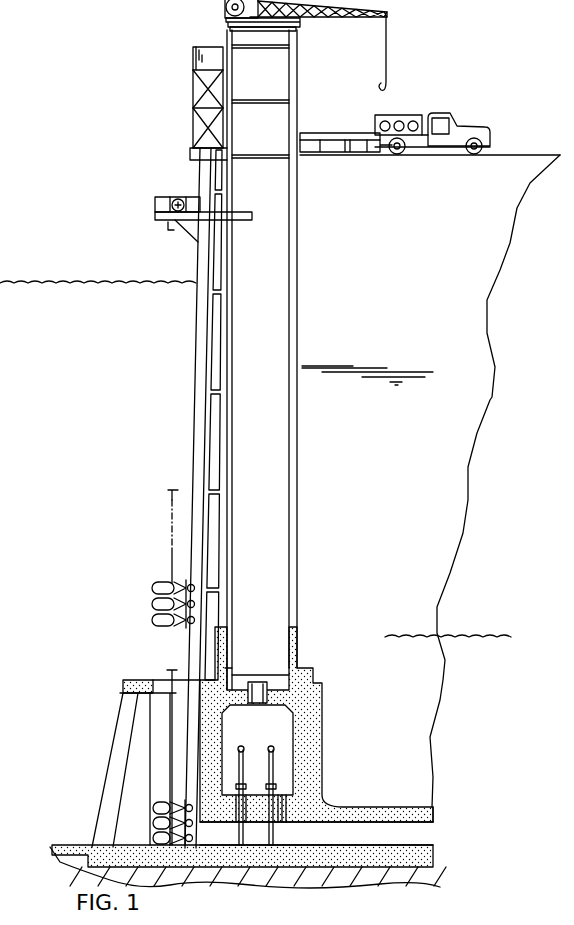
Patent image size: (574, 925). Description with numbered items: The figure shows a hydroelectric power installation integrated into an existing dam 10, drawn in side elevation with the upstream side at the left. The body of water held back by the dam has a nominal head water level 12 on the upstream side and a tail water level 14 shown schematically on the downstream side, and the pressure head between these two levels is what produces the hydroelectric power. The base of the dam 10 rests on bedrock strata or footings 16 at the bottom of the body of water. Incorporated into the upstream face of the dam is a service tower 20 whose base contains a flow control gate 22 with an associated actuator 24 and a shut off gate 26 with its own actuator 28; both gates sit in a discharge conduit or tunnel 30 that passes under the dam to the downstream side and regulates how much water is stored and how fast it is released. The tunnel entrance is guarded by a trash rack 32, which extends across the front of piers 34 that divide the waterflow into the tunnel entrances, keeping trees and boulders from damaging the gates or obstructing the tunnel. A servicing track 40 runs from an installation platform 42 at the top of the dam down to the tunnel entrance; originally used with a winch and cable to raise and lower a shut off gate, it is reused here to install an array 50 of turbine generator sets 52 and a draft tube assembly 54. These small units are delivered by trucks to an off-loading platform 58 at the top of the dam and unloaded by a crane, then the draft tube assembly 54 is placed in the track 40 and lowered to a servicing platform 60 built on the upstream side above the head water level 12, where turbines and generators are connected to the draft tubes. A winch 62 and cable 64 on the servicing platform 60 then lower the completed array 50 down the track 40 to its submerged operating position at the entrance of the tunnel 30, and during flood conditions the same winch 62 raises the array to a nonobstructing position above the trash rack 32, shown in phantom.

The dam 10 is at (399, 302).
The head water level 12 is at (130, 282).
The tail water level 14 is at (466, 640).
The bedrock strata or footings 16 is at (380, 868).
The service tower 20 is at (334, 300).
The flow control gate 22 is at (275, 832).
The actuator 24 is at (272, 753).
The shut off gate 26 is at (238, 833).
The actuator 28 is at (240, 753).
The discharge conduit or tunnel 30 is at (375, 835).
The trash rack 32 is at (122, 731).
The pier 34 is at (154, 768).
The servicing track 40 is at (196, 353).
The installation platform 42 is at (192, 151).
The array of turbine generator sets and draft tube assembly 50 is at (147, 615).
The turbine generator set 52 is at (170, 585).
The draft tube assembly 54 is at (383, 116).
The off-loading platform 58 is at (352, 133).
The servicing platform 60 is at (156, 215).
The winch 62 is at (176, 201).
The cable 64 is at (172, 525).